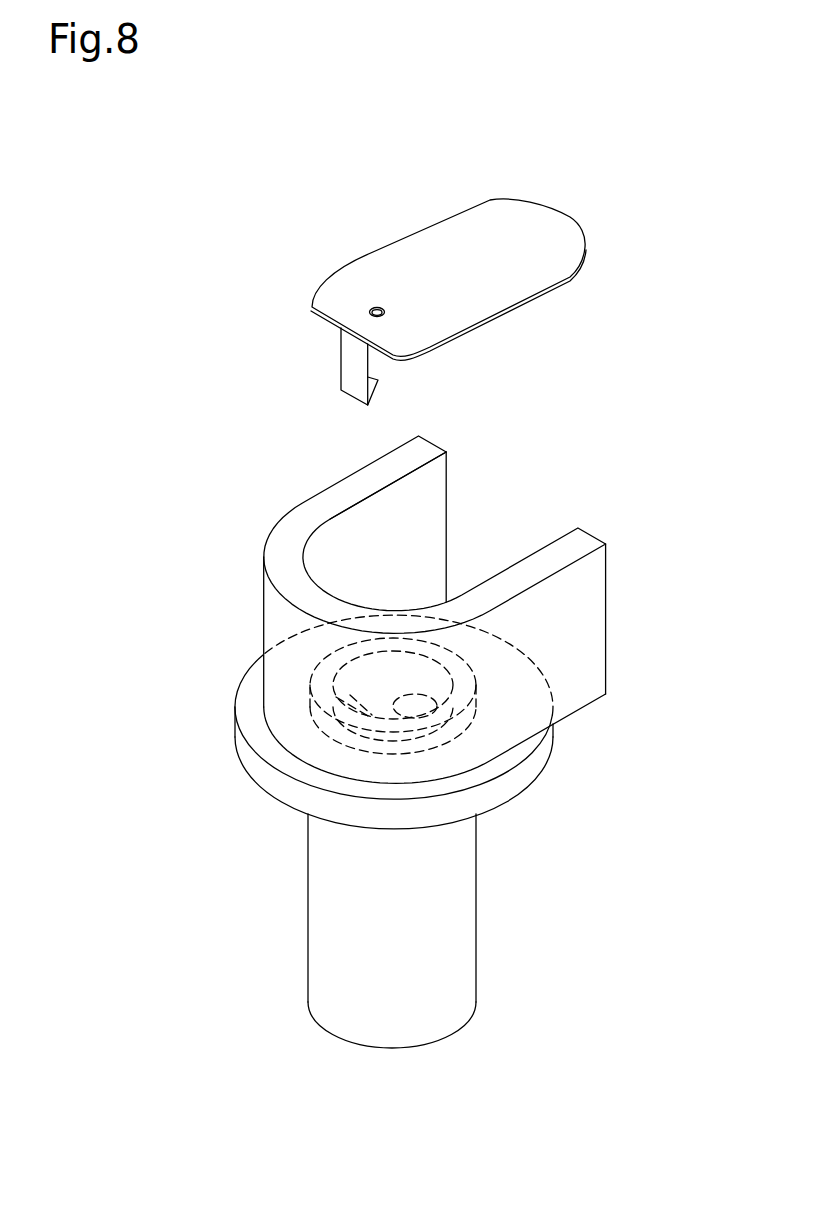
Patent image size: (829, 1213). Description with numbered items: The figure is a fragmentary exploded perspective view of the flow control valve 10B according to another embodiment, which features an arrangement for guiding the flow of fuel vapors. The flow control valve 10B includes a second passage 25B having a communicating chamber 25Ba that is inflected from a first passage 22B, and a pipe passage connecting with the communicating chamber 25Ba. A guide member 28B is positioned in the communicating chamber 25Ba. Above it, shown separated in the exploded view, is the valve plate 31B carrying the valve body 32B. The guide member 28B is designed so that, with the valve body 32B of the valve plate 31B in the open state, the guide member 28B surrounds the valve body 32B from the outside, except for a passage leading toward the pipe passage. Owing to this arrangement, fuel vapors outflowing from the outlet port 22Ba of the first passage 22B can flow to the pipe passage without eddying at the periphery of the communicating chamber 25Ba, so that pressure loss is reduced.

The flow control valve 10B is at (180, 308).
The valve plate 31B is at (372, 252).
The valve body 32B is at (500, 293).
The guide member 28B is at (580, 613).
The second passage 25B is at (435, 534).
The communicating chamber 25Ba is at (584, 504).
The first passage 22B is at (455, 831).
The outlet port 22Ba is at (437, 703).